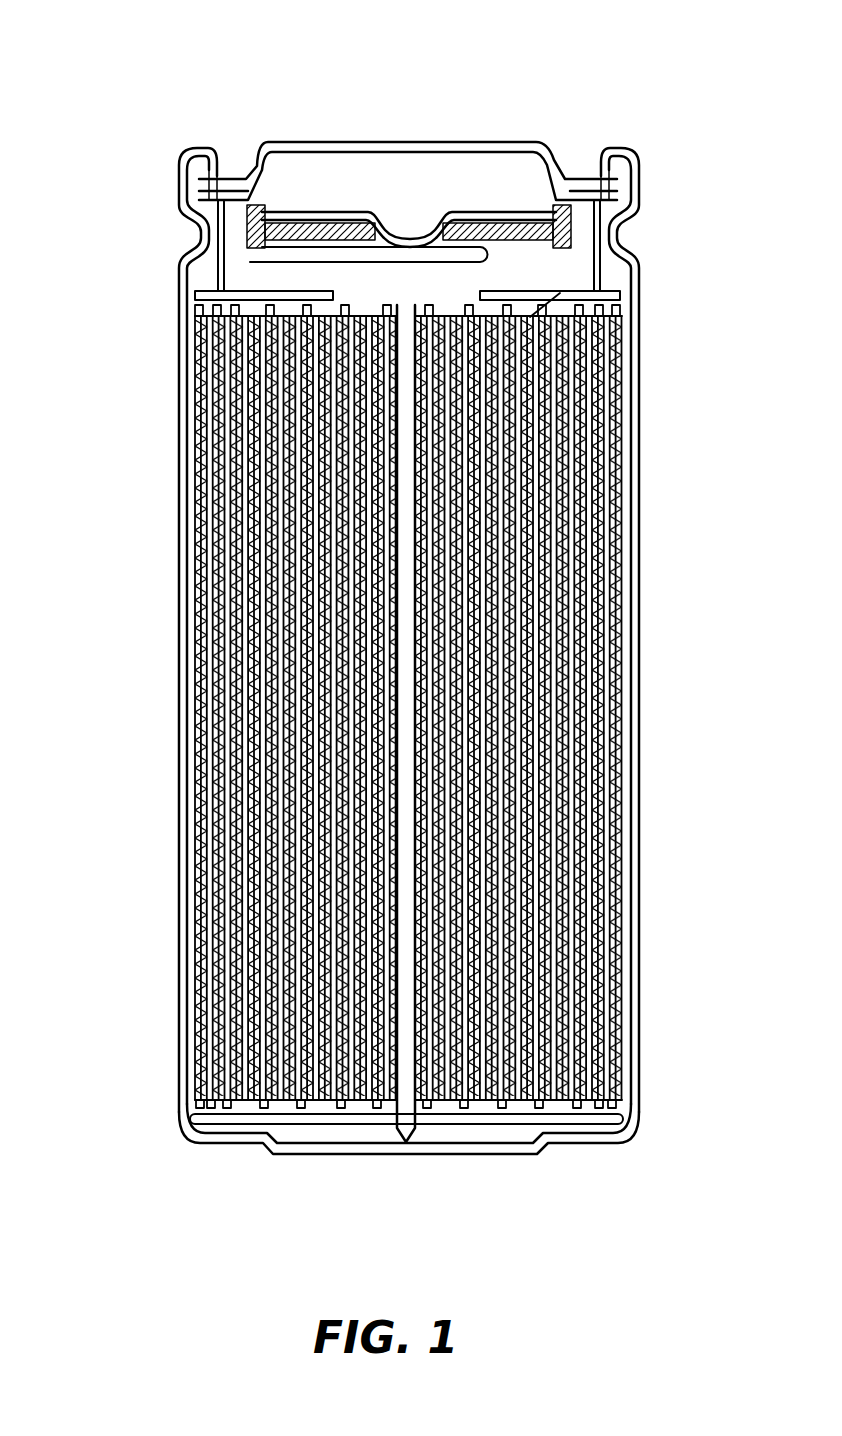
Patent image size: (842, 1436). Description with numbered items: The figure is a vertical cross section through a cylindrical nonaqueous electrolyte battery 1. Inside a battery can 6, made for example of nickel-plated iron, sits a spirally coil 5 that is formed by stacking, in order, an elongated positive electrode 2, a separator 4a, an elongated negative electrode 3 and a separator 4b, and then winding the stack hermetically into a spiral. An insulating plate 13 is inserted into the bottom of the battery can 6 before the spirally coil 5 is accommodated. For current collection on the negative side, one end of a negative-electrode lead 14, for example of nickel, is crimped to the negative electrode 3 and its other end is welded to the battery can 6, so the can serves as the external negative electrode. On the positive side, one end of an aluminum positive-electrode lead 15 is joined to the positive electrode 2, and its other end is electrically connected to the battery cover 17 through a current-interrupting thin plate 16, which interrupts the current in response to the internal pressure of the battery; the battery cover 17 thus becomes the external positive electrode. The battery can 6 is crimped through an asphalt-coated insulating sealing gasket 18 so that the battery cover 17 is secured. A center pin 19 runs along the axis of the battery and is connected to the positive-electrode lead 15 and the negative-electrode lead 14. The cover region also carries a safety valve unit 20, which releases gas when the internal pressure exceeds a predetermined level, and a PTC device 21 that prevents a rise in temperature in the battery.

The nonaqueous electrolyte battery 1 is at (578, 82).
The positive electrode 2 is at (527, 297).
The negative electrode 3 is at (567, 291).
The separator 4a is at (572, 365).
The separator 4b is at (575, 416).
The spirally coil 5 is at (740, 185).
The battery can 6 is at (638, 500).
The insulating plate 13 is at (623, 1121).
The negative-electrode lead 14 is at (285, 1140).
The positive-electrode lead 15 is at (330, 317).
The current-interrupting thin plate 16 is at (262, 256).
The battery cover 17 is at (290, 142).
The insulating sealing gasket 18 is at (620, 170).
The center pin 19 is at (418, 1132).
The safety valve unit 20 is at (500, 212).
The PTC device 21 is at (213, 172).